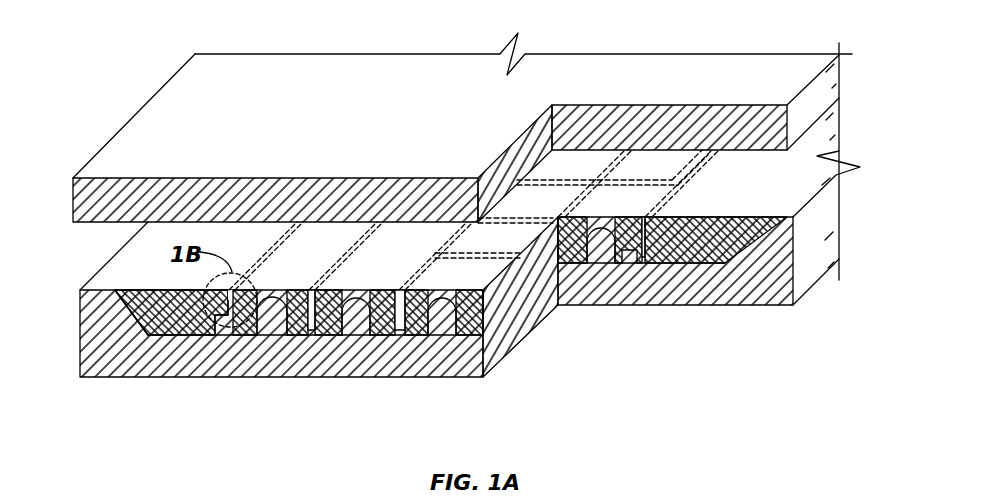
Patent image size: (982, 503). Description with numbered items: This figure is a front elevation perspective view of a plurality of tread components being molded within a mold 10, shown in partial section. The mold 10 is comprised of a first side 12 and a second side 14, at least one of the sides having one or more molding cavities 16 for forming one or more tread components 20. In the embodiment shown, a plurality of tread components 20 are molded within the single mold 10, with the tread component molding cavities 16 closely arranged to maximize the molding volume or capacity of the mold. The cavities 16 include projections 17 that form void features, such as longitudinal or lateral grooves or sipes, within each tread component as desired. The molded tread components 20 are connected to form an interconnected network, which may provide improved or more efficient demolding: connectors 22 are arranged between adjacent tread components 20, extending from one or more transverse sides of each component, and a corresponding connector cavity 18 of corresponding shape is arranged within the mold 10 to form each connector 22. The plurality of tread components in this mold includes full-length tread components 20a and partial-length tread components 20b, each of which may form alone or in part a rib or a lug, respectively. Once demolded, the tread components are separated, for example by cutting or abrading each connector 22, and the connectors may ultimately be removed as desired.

The mold 10 is at (128, 104).
The first side 12 is at (250, 70).
The second side 14 is at (93, 378).
The molding cavity 16 is at (650, 290).
The projection 17 is at (272, 323).
The connector cavity 18 is at (233, 288).
The tread component 20 is at (556, 219).
The full-length tread component 20a is at (328, 240).
The partial-length tread component 20b is at (607, 197).
The connector 22 is at (263, 262).